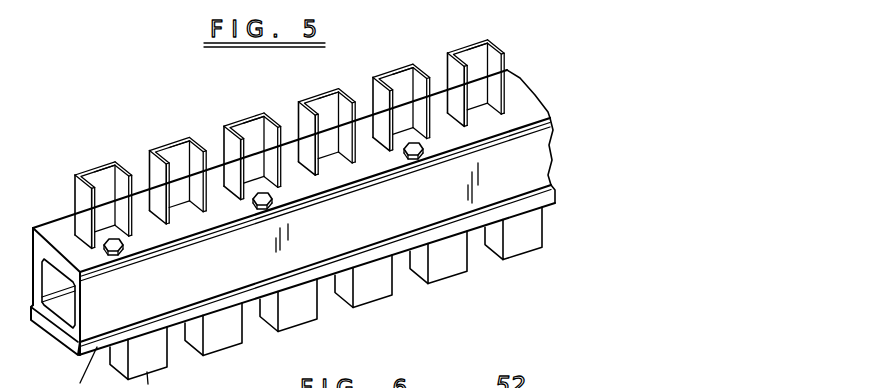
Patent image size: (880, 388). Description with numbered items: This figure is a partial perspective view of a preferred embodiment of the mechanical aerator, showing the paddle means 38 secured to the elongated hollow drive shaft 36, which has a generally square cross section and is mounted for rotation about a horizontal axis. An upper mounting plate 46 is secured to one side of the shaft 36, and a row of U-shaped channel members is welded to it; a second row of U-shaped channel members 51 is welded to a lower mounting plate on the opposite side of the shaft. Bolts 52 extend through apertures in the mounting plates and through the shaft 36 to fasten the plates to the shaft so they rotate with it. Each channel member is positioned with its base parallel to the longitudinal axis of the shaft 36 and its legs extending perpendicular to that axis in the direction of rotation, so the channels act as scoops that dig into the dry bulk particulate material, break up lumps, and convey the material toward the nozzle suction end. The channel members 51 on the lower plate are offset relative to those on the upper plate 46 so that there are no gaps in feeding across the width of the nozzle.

The drive shaft 36 is at (293, 212).
The paddle means 38 is at (156, 135).
The upper mounting plate 46 is at (62, 223).
The U-shaped channel members 51 is at (445, 272).
The bolts 52 is at (272, 200).